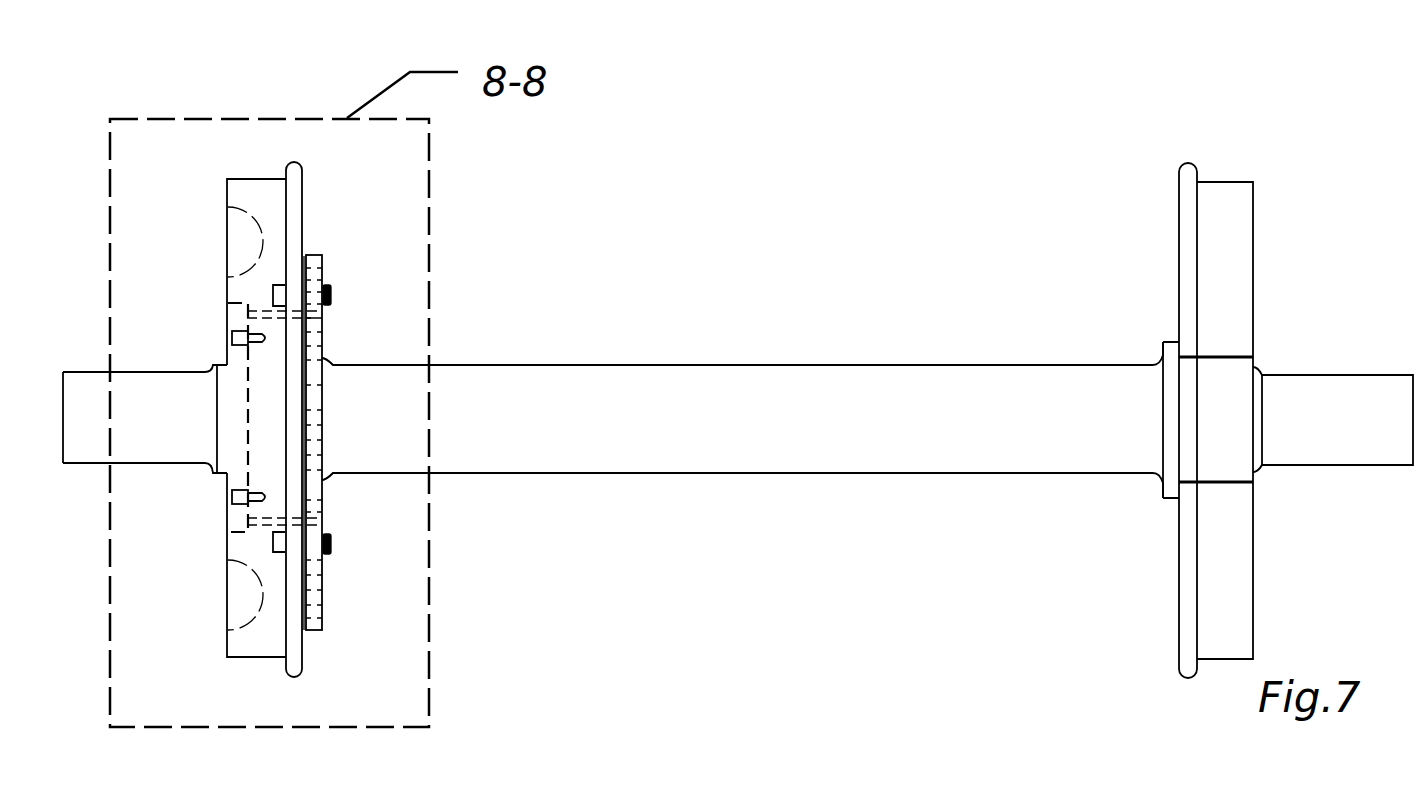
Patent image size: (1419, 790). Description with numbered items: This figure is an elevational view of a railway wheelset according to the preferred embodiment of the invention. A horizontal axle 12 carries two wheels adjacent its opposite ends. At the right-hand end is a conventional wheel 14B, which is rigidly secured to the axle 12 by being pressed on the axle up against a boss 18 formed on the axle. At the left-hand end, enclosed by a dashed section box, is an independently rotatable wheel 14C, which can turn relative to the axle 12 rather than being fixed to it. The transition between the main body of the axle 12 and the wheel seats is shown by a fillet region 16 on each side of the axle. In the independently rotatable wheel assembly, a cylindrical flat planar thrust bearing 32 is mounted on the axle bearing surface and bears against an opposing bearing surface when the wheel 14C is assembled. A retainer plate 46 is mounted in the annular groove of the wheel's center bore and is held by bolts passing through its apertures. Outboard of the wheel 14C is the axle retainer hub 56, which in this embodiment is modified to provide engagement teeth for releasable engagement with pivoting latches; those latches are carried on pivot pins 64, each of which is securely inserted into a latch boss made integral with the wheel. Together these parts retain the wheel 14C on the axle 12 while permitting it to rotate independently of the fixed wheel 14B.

The axle 12 is at (751, 365).
The wheel 14B is at (1180, 172).
The independently rotatable wheel 14C is at (303, 181).
The axle fillet 16 is at (333, 476).
The boss 18 is at (1168, 344).
The thrust bearing 32 is at (304, 343).
The retainer plate 46 is at (247, 400).
The axle retainer hub 56 is at (322, 257).
The pivot pin 64 is at (333, 296).